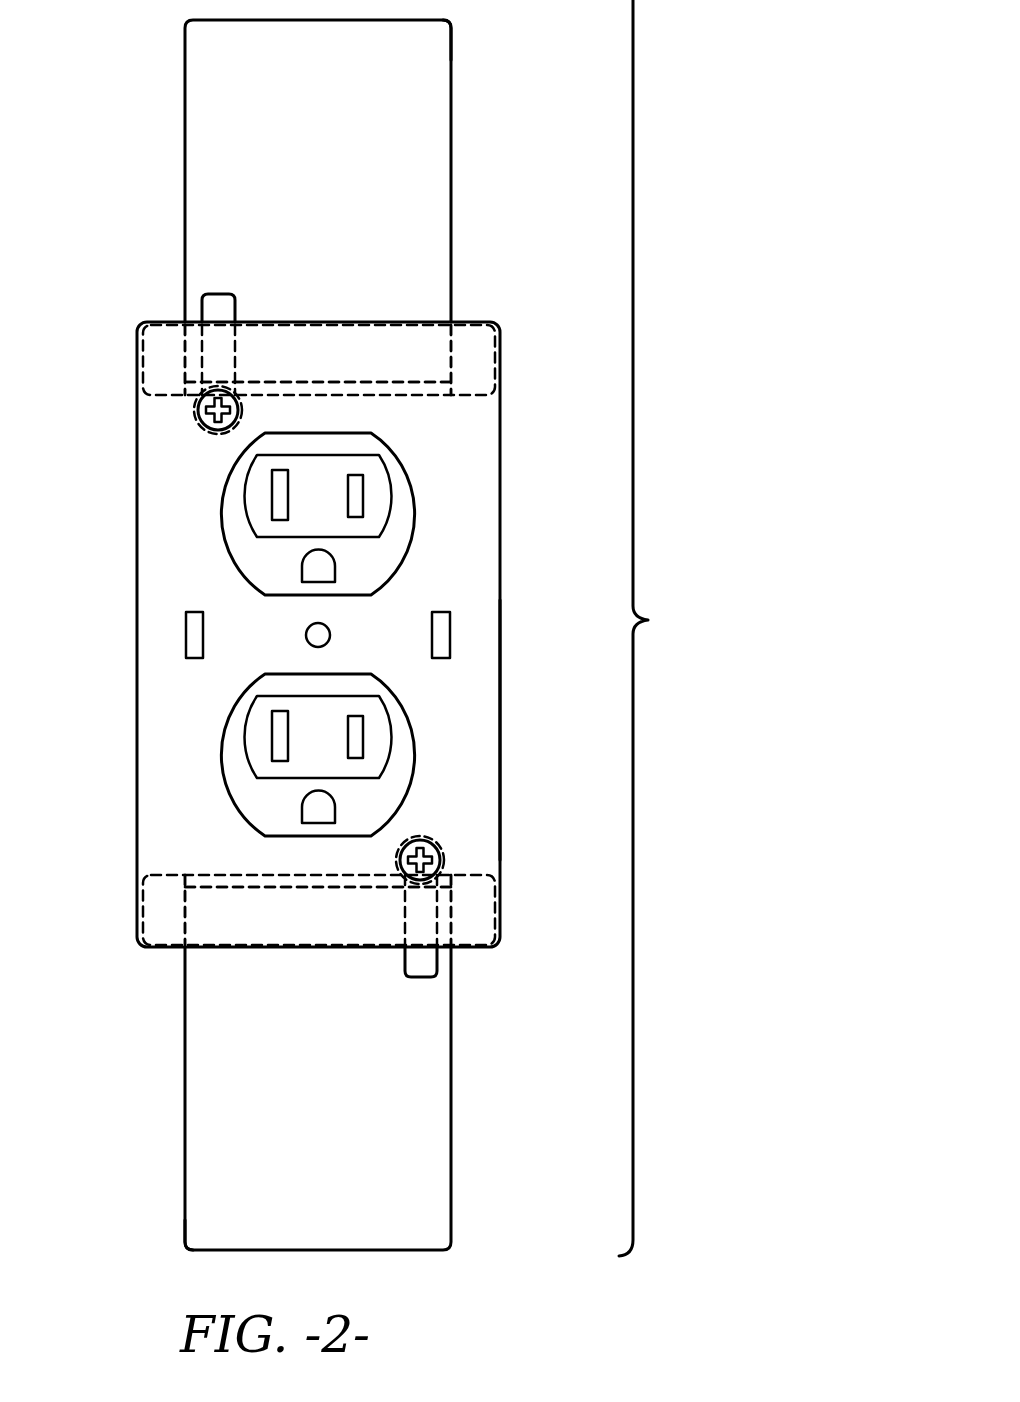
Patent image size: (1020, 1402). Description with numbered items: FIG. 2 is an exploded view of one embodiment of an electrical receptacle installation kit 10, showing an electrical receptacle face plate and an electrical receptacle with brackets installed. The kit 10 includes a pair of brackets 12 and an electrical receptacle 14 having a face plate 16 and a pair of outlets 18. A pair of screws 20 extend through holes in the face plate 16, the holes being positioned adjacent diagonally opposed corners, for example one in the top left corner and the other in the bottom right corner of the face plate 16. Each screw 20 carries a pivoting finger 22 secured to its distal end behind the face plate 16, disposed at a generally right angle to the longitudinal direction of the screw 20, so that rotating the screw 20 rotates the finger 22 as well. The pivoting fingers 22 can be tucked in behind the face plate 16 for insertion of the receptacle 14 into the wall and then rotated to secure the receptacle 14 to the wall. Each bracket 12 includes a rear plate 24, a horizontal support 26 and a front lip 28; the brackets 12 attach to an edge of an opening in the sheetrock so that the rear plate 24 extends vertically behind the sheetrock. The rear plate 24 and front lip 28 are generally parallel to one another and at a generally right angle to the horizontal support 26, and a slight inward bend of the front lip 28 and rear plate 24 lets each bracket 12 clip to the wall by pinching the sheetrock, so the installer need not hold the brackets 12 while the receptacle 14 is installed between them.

The electrical receptacle installation kit 10 is at (654, 628).
The bracket 12 is at (207, 113).
The electrical receptacle 14 is at (168, 542).
The face plate 16 is at (462, 730).
The outlet 18 is at (393, 530).
The screw 20 is at (200, 422).
The pivoting finger 22 is at (213, 292).
The rear plate 24 is at (430, 133).
The horizontal support 26 is at (433, 393).
The front lip 28 is at (160, 353).